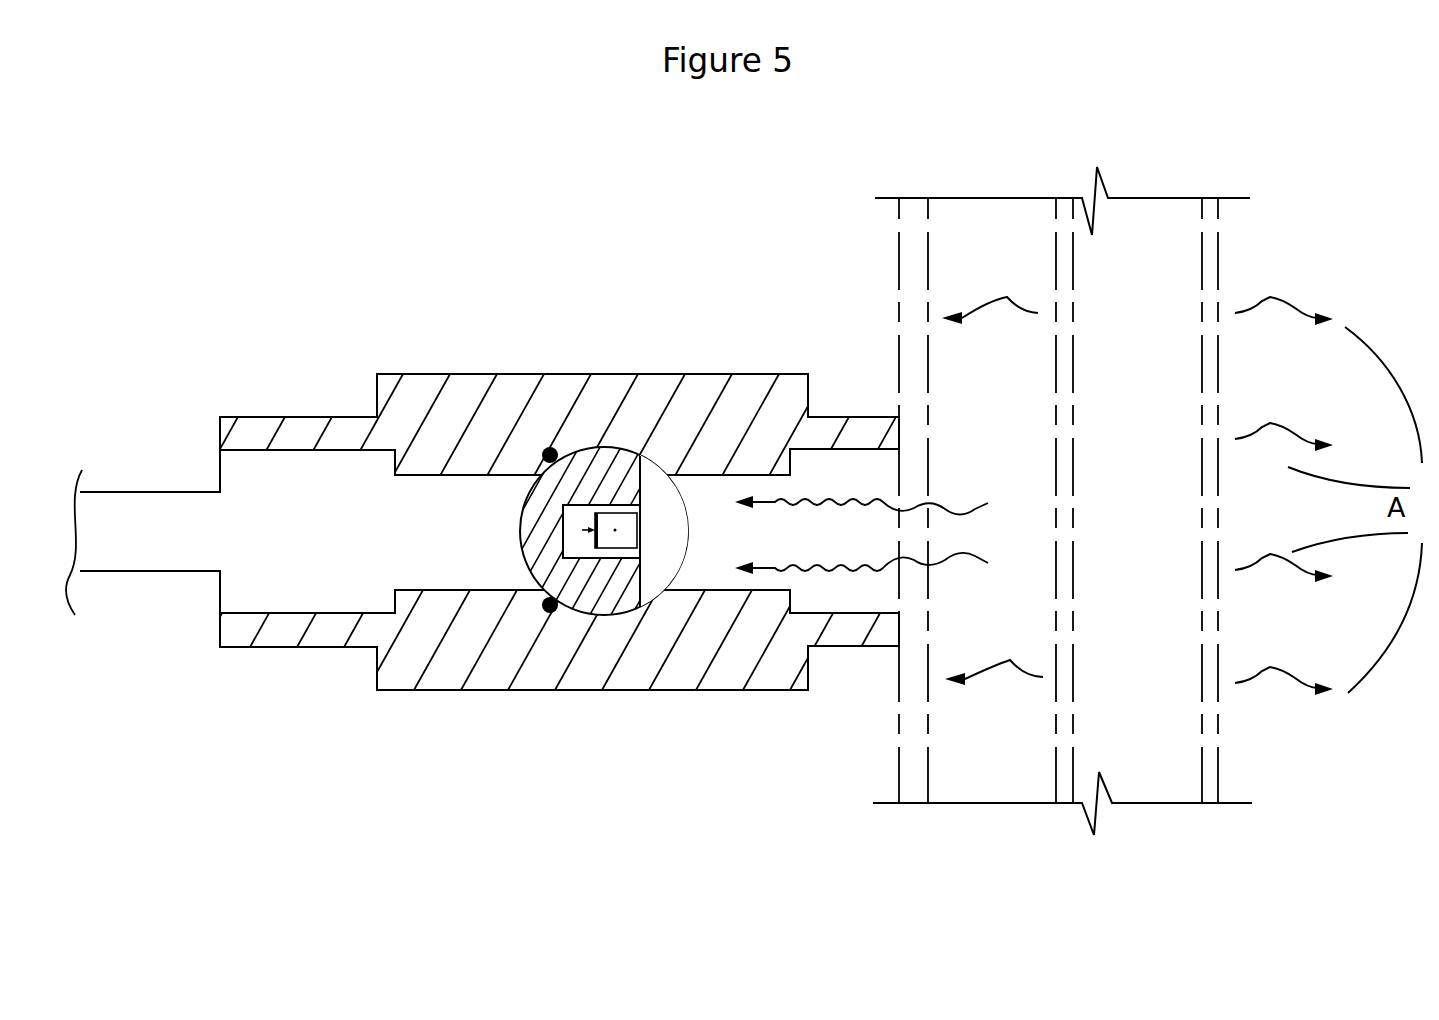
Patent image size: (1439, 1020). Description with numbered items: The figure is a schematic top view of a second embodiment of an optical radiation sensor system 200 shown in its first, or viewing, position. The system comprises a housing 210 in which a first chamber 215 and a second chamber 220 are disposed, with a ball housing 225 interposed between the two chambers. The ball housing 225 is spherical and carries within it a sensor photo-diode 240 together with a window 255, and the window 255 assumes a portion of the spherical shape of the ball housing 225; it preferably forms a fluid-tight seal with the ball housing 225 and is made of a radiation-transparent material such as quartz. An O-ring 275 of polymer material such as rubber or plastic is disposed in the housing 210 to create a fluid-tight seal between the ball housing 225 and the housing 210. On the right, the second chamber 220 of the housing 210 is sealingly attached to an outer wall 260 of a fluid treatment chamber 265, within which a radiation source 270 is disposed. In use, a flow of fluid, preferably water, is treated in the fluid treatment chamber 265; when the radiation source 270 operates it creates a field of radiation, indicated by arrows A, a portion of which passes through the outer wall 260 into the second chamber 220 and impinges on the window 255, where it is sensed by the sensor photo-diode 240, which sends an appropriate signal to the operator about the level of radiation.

The optical radiation sensor system 200 is at (430, 322).
The housing 210 is at (702, 388).
The first chamber 215 is at (315, 547).
The second chamber 220 is at (790, 548).
The ball housing 225 is at (627, 588).
The sensor photo-diode 240 is at (612, 540).
The window 255 is at (655, 549).
The outer wall 260 is at (908, 247).
The fluid treatment chamber 265 is at (1170, 152).
The radiation source 270 is at (1148, 527).
The O-ring 275 is at (553, 611).